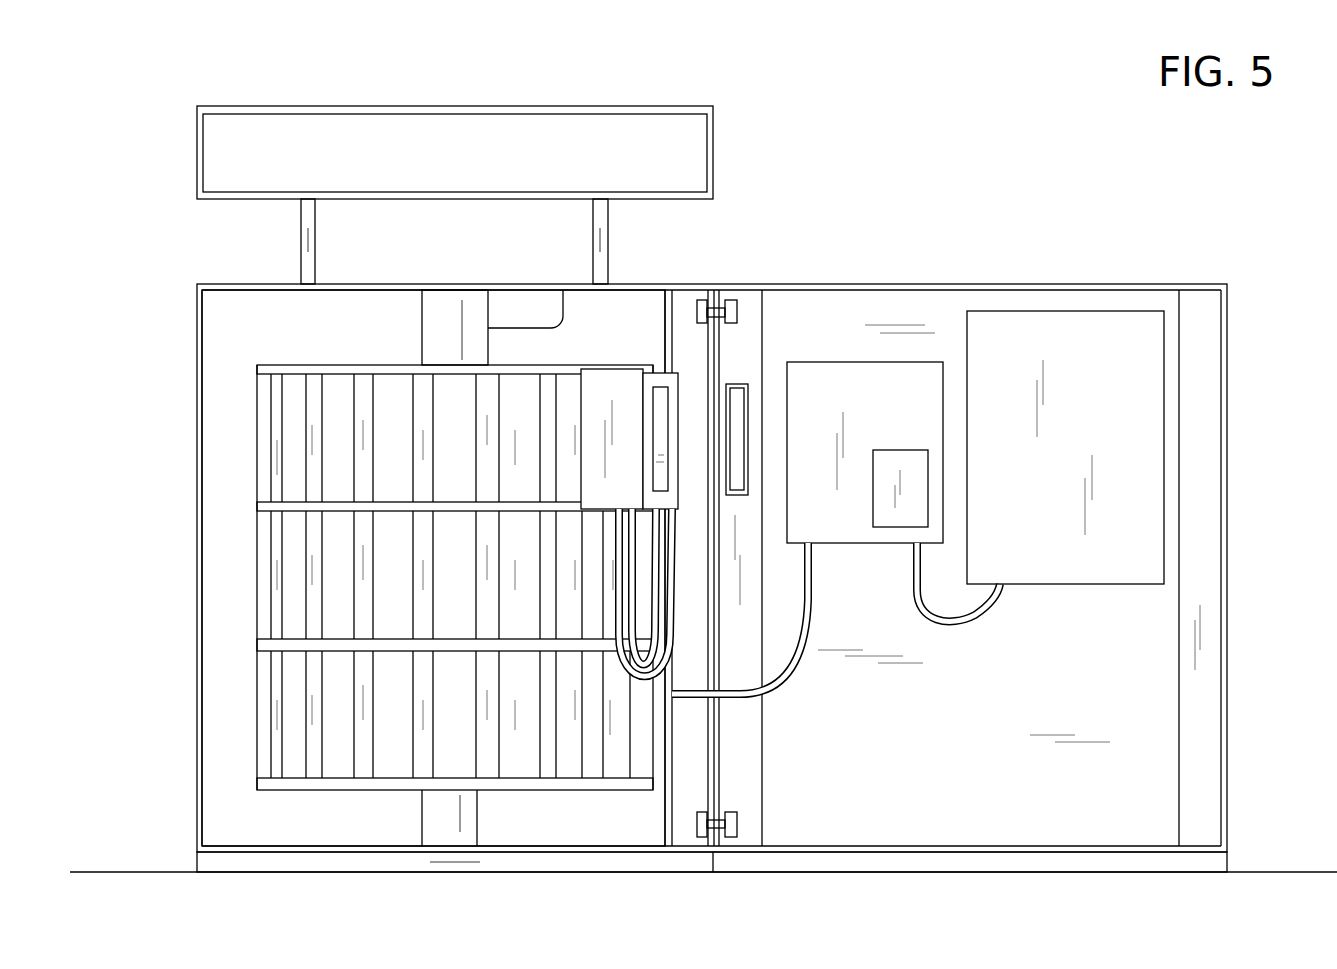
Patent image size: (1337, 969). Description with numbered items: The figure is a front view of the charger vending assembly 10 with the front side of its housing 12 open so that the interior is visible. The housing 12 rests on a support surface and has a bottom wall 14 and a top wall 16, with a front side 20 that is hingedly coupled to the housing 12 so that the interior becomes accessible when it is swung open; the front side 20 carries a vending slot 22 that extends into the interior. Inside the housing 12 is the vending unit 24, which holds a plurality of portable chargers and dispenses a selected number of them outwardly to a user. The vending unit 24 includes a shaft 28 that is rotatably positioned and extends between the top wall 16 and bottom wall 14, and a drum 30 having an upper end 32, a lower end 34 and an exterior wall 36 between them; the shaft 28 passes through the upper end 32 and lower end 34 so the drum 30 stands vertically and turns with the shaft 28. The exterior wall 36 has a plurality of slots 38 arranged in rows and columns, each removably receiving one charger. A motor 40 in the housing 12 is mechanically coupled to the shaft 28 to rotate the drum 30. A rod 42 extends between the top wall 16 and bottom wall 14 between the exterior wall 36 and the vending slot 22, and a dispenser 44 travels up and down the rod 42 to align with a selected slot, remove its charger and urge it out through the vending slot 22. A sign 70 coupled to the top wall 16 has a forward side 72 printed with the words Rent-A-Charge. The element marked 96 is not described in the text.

The charger vending assembly 10 is at (818, 126).
The housing 12 is at (197, 283).
The bottom wall 14 is at (628, 873).
The top wall 16 is at (668, 285).
The front side 20 is at (1228, 302).
The vending slot 22 is at (740, 383).
The vending unit 24 is at (243, 393).
The shaft 28 is at (423, 322).
The drum 30 is at (373, 500).
The upper end 32 is at (525, 366).
The lower end 34 is at (369, 789).
The exterior wall 36 is at (878, 362).
The slots 38 is at (335, 462).
The motor 40 is at (563, 310).
The rod 42 is at (672, 305).
The dispenser 44 is at (600, 488).
The sign 70 is at (255, 106).
The forward side 72 is at (227, 150).
The display panel 96 is at (947, 320).